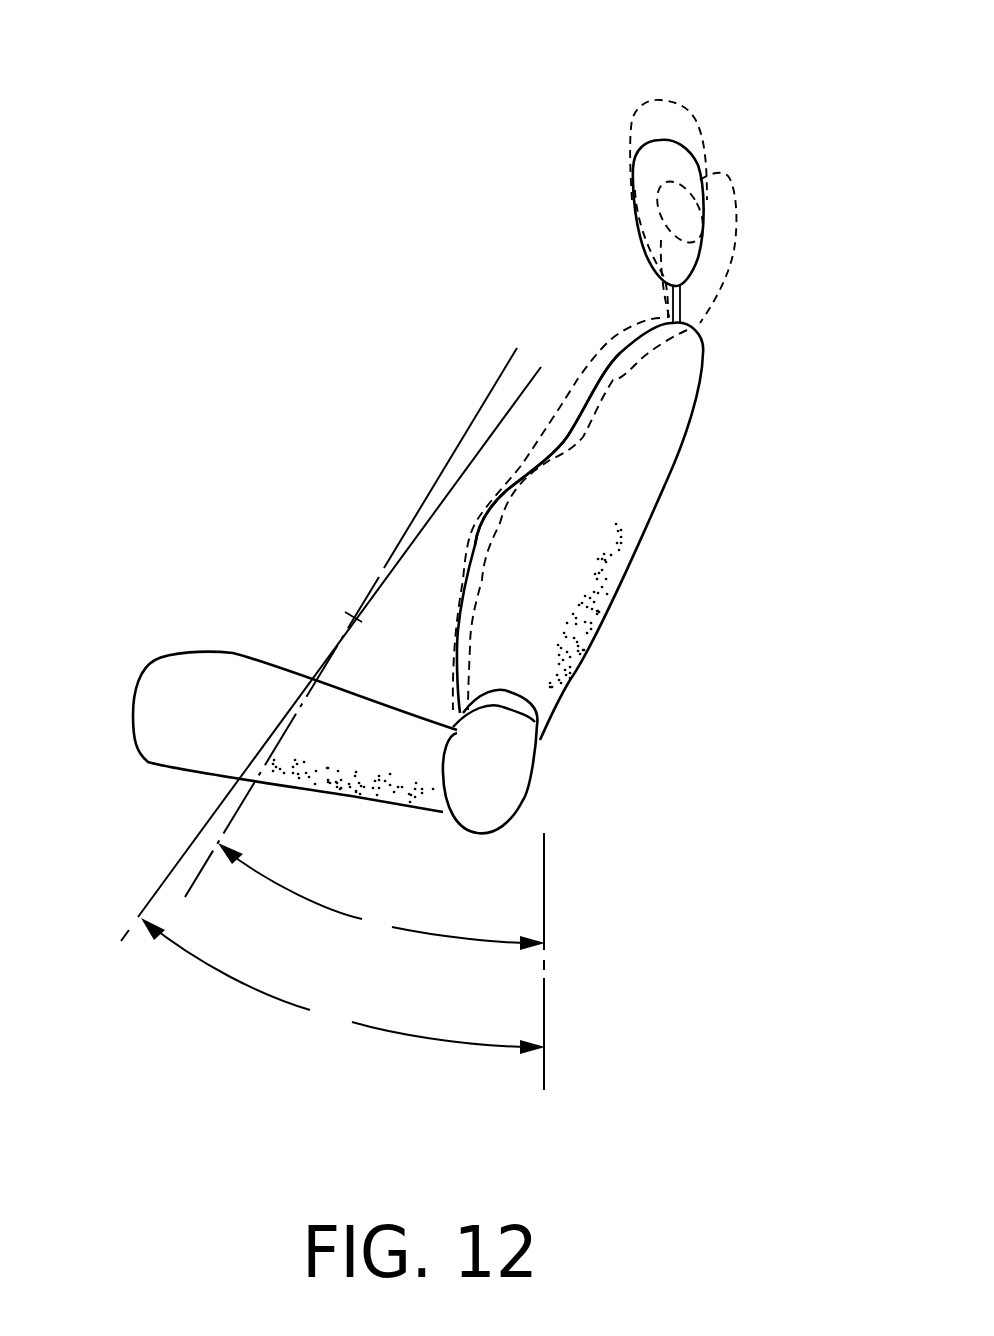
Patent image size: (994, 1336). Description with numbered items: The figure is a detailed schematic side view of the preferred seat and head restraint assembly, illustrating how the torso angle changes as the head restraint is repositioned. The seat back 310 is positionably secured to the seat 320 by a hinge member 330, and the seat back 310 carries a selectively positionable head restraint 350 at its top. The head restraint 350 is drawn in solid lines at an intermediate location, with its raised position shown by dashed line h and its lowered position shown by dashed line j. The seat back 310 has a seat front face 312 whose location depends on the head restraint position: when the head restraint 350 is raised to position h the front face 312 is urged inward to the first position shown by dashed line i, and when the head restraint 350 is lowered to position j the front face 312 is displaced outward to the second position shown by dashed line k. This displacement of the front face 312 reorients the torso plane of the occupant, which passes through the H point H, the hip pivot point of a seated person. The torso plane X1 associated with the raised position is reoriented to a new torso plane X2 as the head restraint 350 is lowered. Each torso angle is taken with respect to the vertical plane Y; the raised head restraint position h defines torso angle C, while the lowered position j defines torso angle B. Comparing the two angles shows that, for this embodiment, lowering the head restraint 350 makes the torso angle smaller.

The seat back 310 is at (620, 513).
The seat front face 312 is at (554, 447).
The seat 320 is at (202, 758).
The hinge member 330 is at (503, 778).
The head restraint 350 is at (658, 165).
The raised head restraint position h is at (672, 100).
The lowered head restraint position j is at (710, 180).
The second outward position of front face k is at (595, 360).
The first inward position of front face i is at (623, 380).
The torso plane X1 is at (415, 535).
The new torso plane X2 is at (478, 410).
The H point H is at (353, 615).
The vertical plane Y is at (545, 1005).
The torso angle B is at (381, 896).
The torso angle C is at (343, 986).